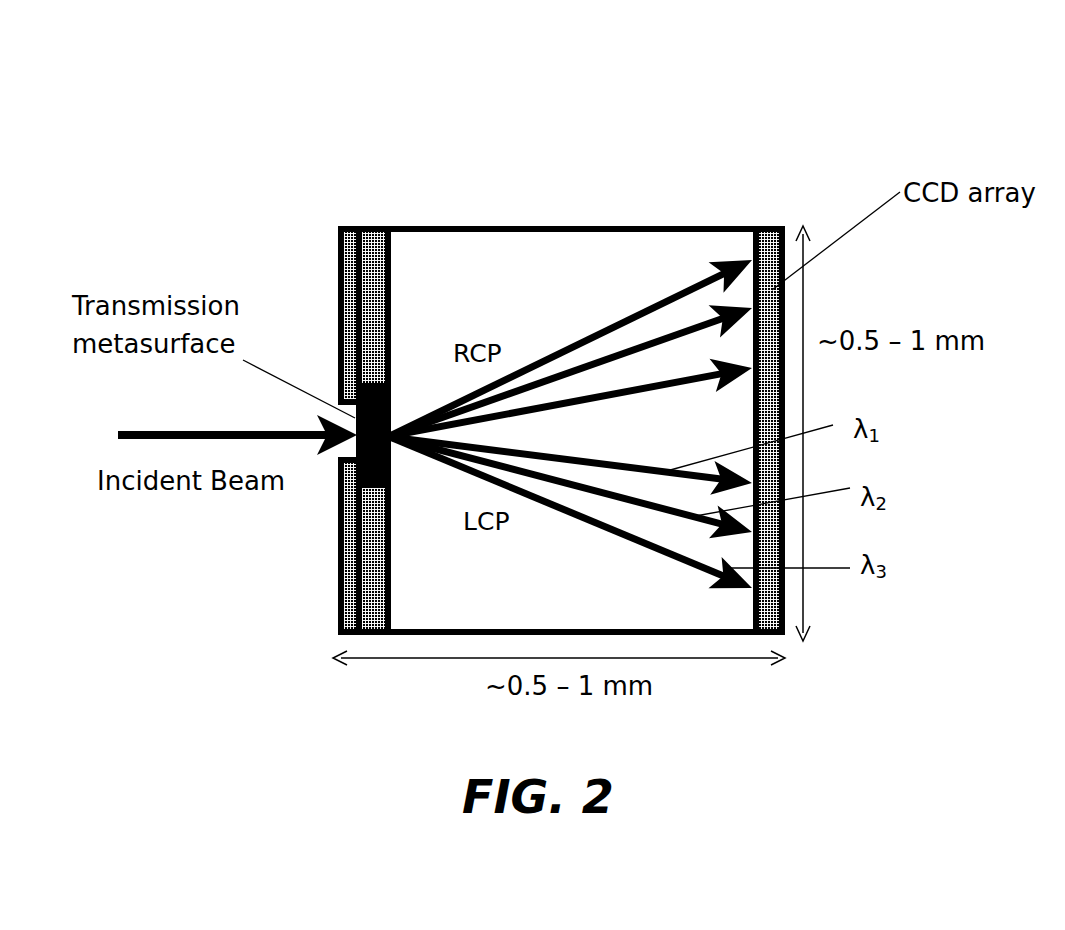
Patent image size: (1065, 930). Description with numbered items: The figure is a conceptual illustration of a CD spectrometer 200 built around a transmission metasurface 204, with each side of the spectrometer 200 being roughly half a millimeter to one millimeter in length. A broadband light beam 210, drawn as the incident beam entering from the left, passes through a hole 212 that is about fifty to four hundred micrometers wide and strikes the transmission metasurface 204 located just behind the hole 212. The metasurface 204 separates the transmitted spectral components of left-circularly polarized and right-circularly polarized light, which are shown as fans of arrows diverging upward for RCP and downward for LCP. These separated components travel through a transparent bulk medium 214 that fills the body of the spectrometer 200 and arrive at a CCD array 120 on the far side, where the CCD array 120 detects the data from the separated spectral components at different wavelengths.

The CD spectrometer 200 is at (504, 330).
The transparent bulk medium 214 is at (507, 250).
The hole 212 is at (337, 470).
The transmission metasurface 204 is at (393, 462).
The CCD array 120 is at (784, 300).
The broadband light beam 210 is at (157, 427).